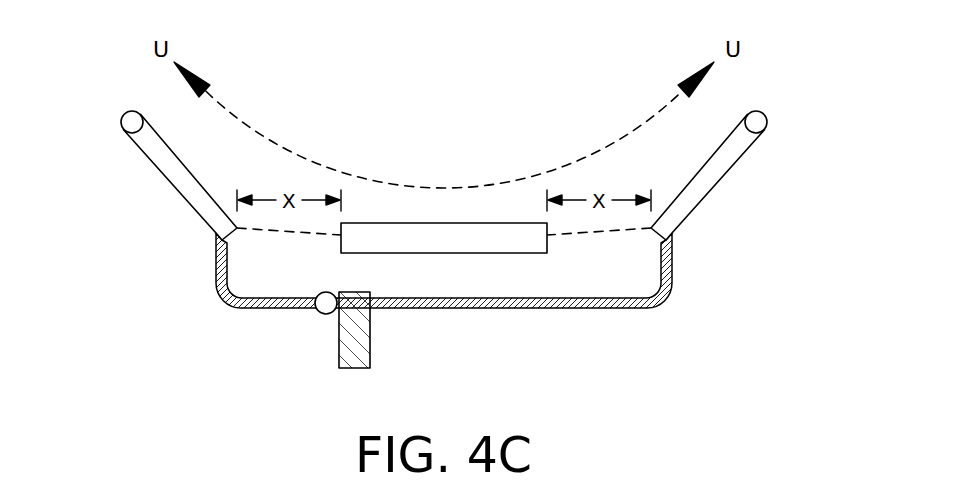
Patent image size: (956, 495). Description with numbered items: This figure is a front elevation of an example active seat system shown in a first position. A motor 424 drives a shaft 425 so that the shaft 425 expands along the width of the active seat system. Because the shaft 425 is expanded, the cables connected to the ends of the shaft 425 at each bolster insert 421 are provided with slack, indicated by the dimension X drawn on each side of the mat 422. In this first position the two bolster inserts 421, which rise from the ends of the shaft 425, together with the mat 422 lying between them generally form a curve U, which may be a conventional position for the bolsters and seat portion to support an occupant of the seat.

The bolster insert 421 is at (158, 172).
The mat 422 is at (458, 210).
The motor 424 is at (339, 350).
The shaft 425 is at (669, 296).